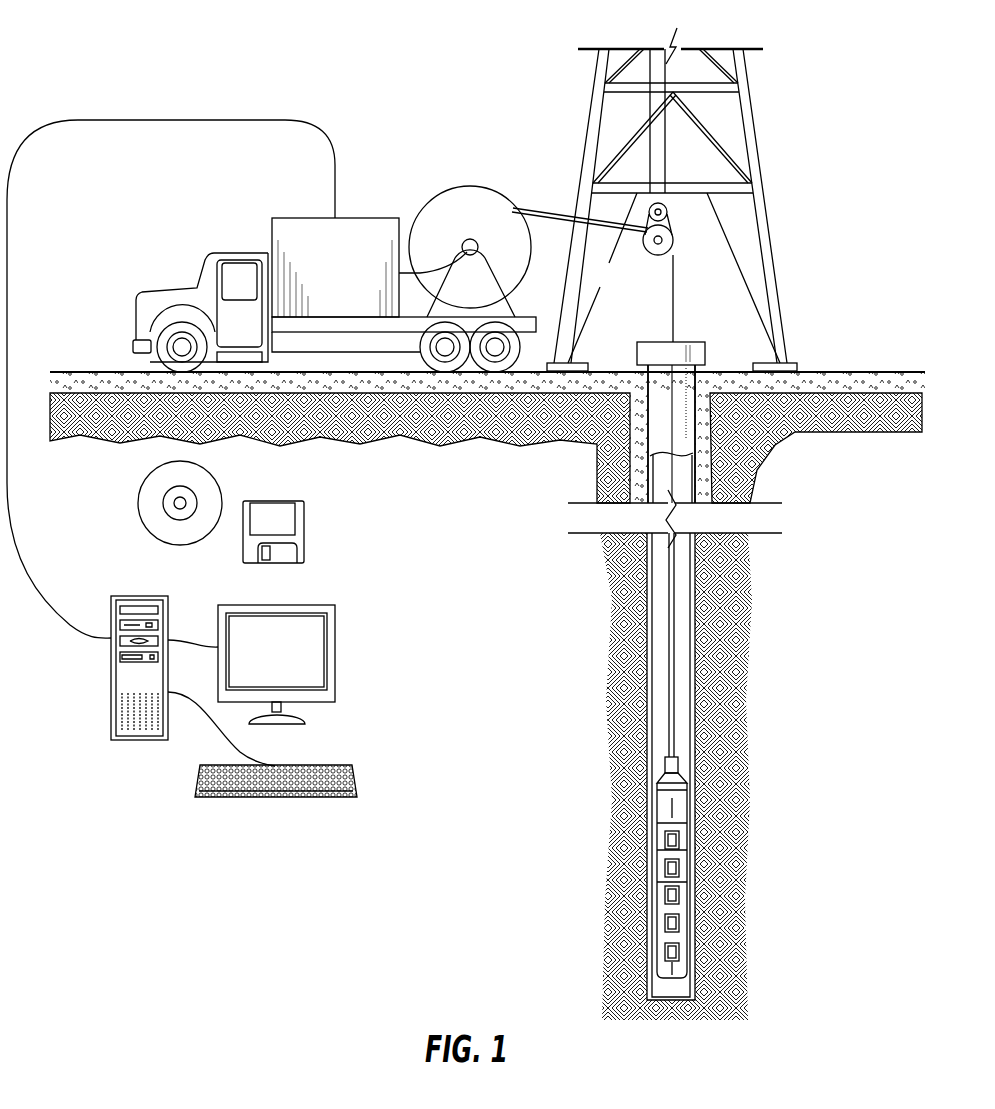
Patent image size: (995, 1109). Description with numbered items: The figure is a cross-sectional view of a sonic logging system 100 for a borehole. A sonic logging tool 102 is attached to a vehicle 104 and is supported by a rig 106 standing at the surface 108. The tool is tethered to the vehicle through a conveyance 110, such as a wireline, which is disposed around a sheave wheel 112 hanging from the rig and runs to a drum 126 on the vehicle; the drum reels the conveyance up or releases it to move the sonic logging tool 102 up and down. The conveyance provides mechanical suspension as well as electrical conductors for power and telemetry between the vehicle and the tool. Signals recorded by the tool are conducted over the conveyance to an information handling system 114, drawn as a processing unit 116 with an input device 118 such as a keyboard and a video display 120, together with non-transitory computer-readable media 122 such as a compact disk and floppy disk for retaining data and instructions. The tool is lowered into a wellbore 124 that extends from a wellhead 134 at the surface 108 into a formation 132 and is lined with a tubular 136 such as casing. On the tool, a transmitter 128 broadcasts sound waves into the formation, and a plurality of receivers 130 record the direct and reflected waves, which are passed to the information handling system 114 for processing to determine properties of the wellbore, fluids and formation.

The sonic logging system 100 is at (132, 42).
The sonic logging tool 102 is at (668, 867).
The vehicle 104 is at (350, 218).
The rig 106 is at (768, 203).
The surface 108 is at (832, 371).
The conveyance 110 is at (668, 625).
The sheave wheel 112 is at (657, 256).
The information handling system 114 is at (242, 662).
The processing unit 116 is at (140, 596).
The input device 118 is at (355, 777).
The video display 120 is at (275, 605).
The non-transitory computer-readable media 122 is at (200, 465).
The wellbore 124 is at (700, 495).
The drum 126 is at (475, 187).
The transmitter 128 is at (680, 838).
The receiver 130 is at (680, 952).
The formation 132 is at (872, 617).
The wellhead 134 is at (712, 352).
The tubular 136 is at (655, 430).